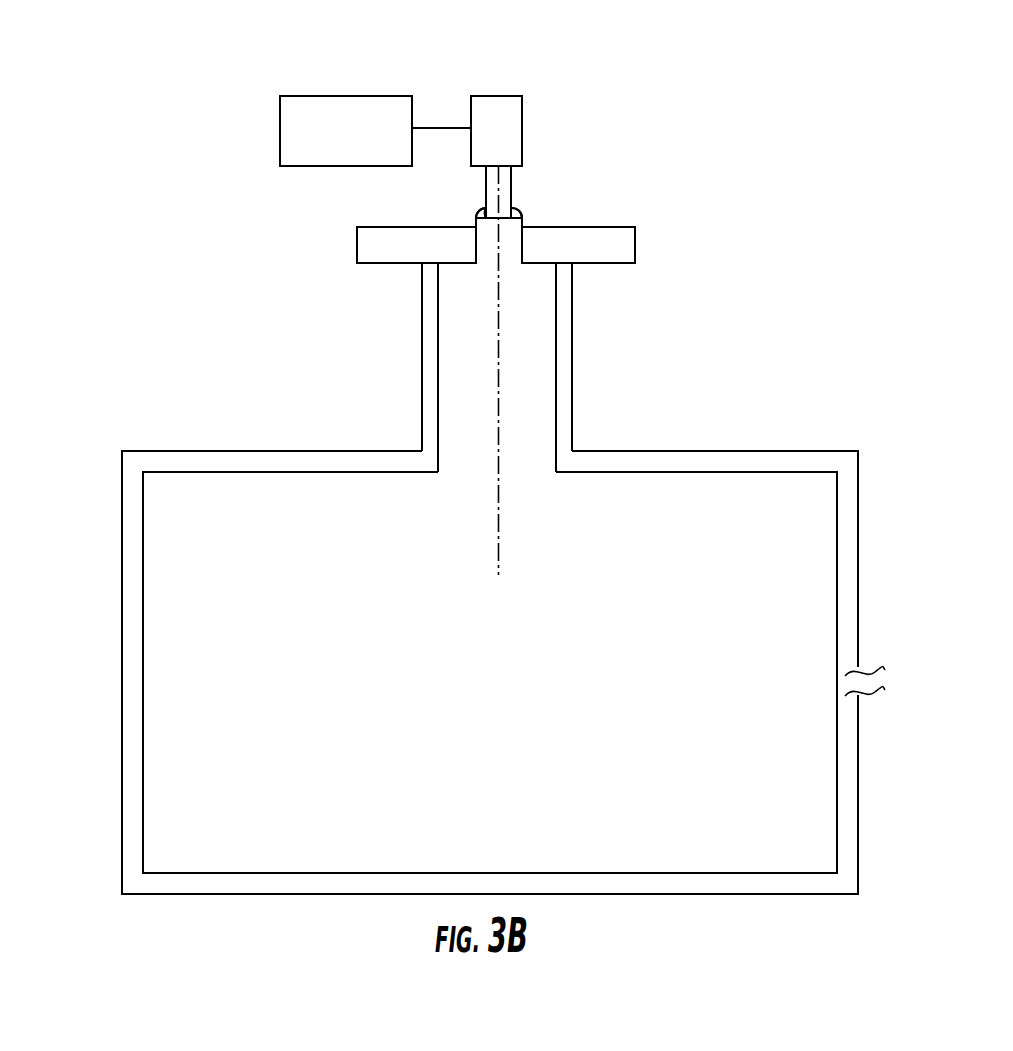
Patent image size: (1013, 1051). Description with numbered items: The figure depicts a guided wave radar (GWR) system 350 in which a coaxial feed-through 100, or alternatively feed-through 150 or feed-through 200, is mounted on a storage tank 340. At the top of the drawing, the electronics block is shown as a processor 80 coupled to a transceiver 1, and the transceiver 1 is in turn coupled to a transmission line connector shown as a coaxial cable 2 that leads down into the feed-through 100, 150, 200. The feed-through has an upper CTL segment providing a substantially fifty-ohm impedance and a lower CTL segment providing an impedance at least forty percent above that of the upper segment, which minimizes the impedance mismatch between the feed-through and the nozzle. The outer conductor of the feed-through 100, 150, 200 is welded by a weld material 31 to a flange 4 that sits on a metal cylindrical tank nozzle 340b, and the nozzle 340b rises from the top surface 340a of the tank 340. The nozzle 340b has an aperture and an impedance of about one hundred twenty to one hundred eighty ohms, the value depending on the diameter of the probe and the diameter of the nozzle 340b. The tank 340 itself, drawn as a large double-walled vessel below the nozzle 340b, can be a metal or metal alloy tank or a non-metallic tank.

The GWR system 350 is at (249, 68).
The processor 80 is at (280, 128).
The transceiver 1 is at (522, 107).
The coaxial cable 2 is at (510, 172).
The weld material 31 is at (478, 208).
The coaxial feed-through 100 is at (523, 243).
The feed-through 150 is at (499, 240).
The feed-through 200 is at (499, 240).
The flange 4 is at (635, 245).
The tank nozzle 340b is at (422, 312).
The top surface 340a is at (717, 451).
The tank 340 is at (122, 657).